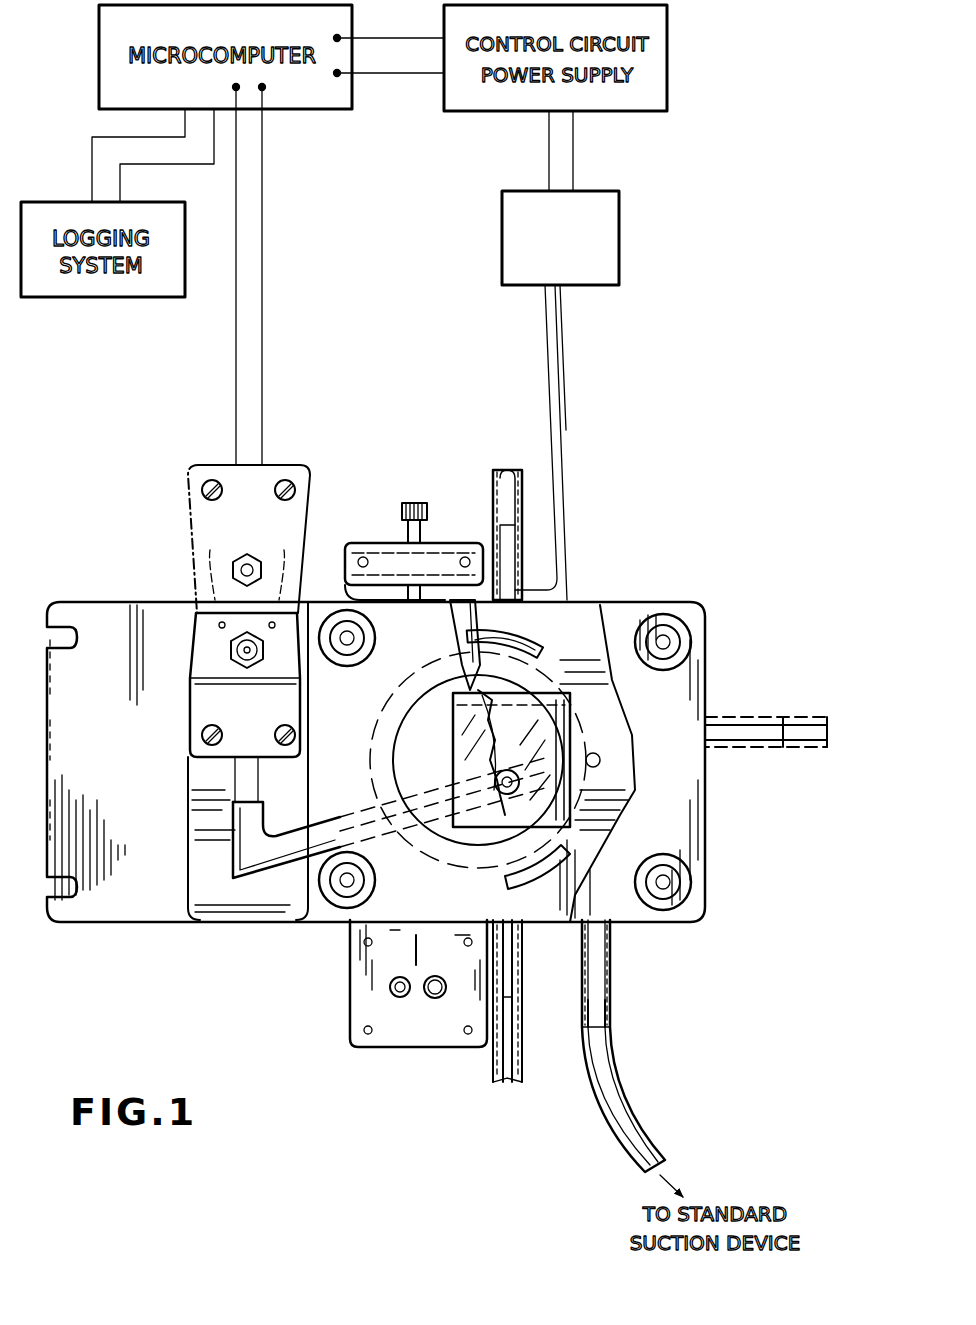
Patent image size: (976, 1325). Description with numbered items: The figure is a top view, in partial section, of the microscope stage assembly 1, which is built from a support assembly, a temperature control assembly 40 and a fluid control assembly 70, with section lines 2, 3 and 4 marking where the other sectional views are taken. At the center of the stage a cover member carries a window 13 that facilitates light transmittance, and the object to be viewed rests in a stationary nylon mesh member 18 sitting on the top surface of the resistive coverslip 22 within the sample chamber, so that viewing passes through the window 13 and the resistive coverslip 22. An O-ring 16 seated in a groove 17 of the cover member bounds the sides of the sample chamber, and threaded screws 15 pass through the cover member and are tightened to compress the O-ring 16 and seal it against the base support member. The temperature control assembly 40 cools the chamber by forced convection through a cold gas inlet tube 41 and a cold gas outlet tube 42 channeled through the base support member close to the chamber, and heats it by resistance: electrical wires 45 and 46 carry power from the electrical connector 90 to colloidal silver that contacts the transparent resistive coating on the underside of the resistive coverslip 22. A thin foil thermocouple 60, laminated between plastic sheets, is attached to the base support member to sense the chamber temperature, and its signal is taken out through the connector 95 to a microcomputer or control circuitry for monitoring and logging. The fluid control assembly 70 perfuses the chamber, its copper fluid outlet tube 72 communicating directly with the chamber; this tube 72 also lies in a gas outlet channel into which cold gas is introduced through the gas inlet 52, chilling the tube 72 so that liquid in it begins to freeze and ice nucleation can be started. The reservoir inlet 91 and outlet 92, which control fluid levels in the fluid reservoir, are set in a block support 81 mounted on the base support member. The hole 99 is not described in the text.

The stage assembly 1 is at (710, 590).
The section line 2 is at (378, 460).
The section line 3 is at (466, 422).
The section line 4 is at (520, 392).
The window 13 is at (450, 755).
The threaded screws 15 is at (343, 632).
The O-ring 16 is at (545, 637).
The groove 17 is at (385, 733).
The nylon mesh member 18 is at (447, 600).
The resistive coverslip 22 is at (530, 697).
The temperature control assembly 40 is at (258, 882).
The cold gas inlet tube 41 is at (508, 980).
The cold gas outlet tube 42 is at (491, 500).
The electrical wire 45 is at (568, 354).
The electrical wire 46 is at (555, 352).
The gas inlet 52 is at (768, 731).
The thermocouple 60 is at (492, 800).
The fluid control assembly 70 is at (628, 947).
The fluid outlet tube 72 is at (612, 993).
The block support 81 is at (443, 1050).
The electrical connector 90 is at (544, 248).
The reservoir inlet 91 is at (390, 990).
The reservoir outlet 92 is at (425, 997).
The connector 95 is at (205, 632).
The hole 99 is at (600, 766).